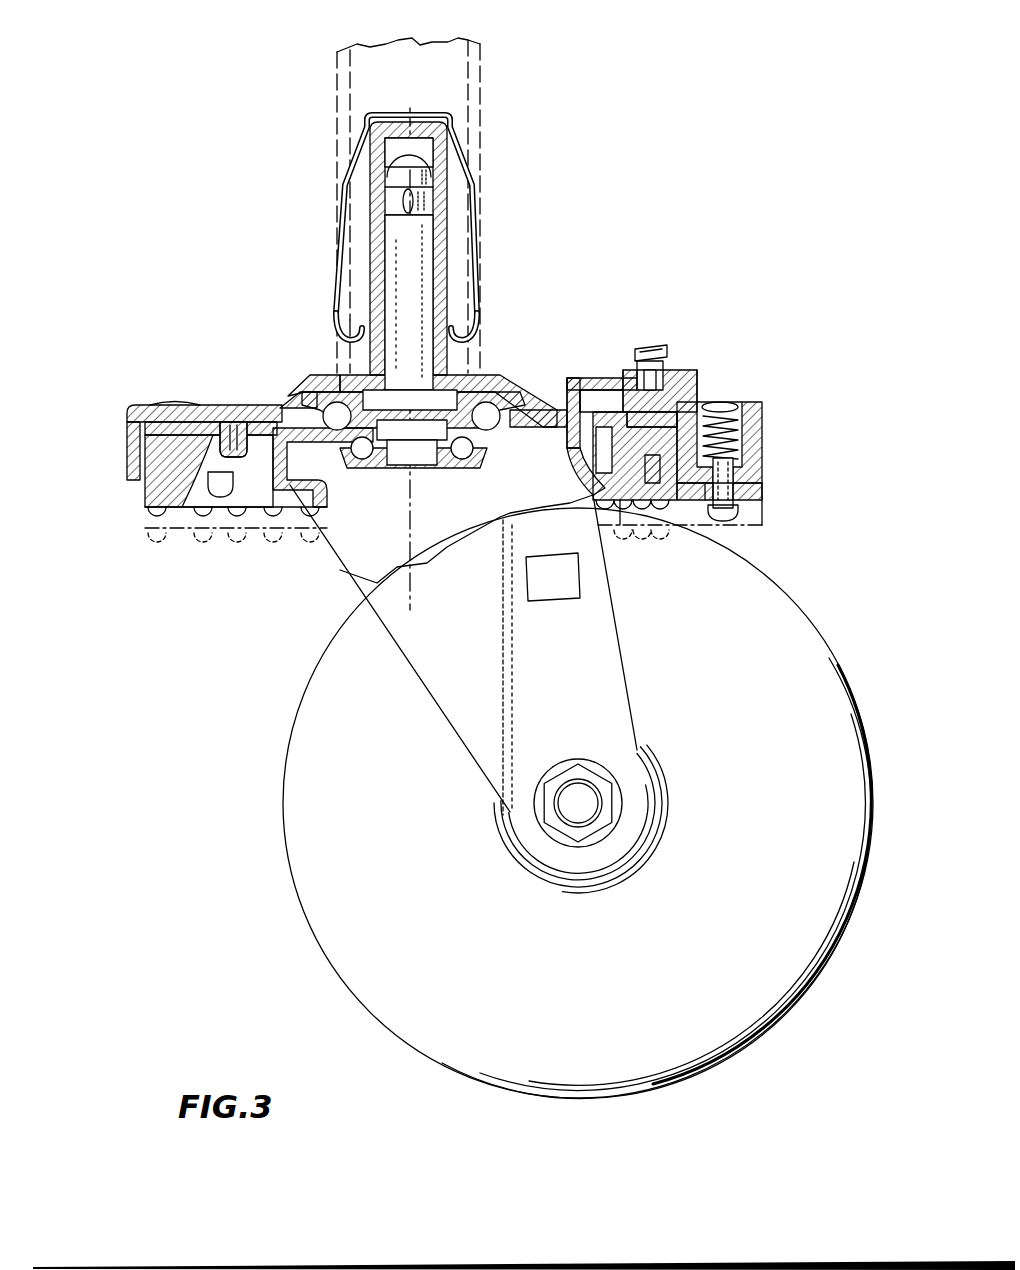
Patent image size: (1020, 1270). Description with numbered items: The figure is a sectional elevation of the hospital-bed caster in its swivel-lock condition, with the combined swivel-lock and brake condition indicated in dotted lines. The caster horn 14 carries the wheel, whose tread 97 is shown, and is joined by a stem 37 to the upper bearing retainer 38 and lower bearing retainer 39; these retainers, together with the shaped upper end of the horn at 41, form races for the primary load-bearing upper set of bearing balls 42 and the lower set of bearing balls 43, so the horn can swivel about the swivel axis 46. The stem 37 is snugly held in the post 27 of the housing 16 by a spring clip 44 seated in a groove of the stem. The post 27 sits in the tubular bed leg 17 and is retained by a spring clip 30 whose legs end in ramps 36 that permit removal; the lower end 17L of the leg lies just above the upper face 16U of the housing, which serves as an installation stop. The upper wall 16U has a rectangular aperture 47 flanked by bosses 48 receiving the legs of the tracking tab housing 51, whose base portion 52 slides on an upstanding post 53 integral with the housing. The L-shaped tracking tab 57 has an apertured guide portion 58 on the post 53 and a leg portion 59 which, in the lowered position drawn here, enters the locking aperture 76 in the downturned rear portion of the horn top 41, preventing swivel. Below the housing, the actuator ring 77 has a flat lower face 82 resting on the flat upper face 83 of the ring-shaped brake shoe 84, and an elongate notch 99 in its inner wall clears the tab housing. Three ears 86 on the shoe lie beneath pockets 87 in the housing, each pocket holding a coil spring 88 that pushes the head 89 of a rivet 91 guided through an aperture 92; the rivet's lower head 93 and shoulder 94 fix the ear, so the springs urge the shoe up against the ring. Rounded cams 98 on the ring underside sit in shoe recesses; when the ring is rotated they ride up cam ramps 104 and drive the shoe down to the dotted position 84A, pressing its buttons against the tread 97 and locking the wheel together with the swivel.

The caster horn 14 is at (473, 722).
The housing 16 is at (127, 415).
The upper face of the housing 16U is at (483, 373).
The bed leg 17 is at (482, 50).
The lower end of the bed leg 17L is at (347, 372).
The post 27 is at (378, 187).
The spring clip 30 is at (340, 270).
The ramp 36 is at (337, 333).
The stem 37 is at (397, 248).
The upper bearing retainer 38 is at (282, 403).
The lower bearing retainer 39 is at (448, 470).
The upper end of the horn 41 is at (292, 470).
The upper set of bearing balls 42 is at (288, 395).
The lower set of bearing balls 43 is at (340, 487).
The spring clip 44 is at (420, 205).
The swivel axis 46 is at (410, 538).
The aperture 47 is at (572, 378).
The bosses 48 is at (555, 378).
The tracking tab housing 51 is at (705, 366).
The base portion 52 is at (632, 368).
The upstanding post 53 is at (662, 350).
The tracking tab 57 is at (678, 365).
The apertured guide portion 58 is at (605, 378).
The leg portion 59 is at (567, 455).
The locking aperture 76 is at (548, 440).
The actuator ring 77 is at (140, 412).
The flat lower face 82 is at (130, 460).
The flat upper face 83 is at (178, 405).
The brake shoe 84 is at (155, 493).
The brake shoe lowered position 84A is at (150, 530).
The ears 86 is at (765, 492).
The pockets 87 is at (742, 428).
The coil spring 88 is at (765, 415).
The rivet head 89 is at (740, 405).
The rivet 91 is at (742, 398).
The aperture 92 is at (765, 462).
The lower rivet head 93 is at (742, 522).
The shoulder 94 is at (716, 500).
The tread 97 is at (318, 946).
The cams 98 is at (212, 437).
The notch 99 is at (630, 525).
The cam ramp 104 is at (262, 432).